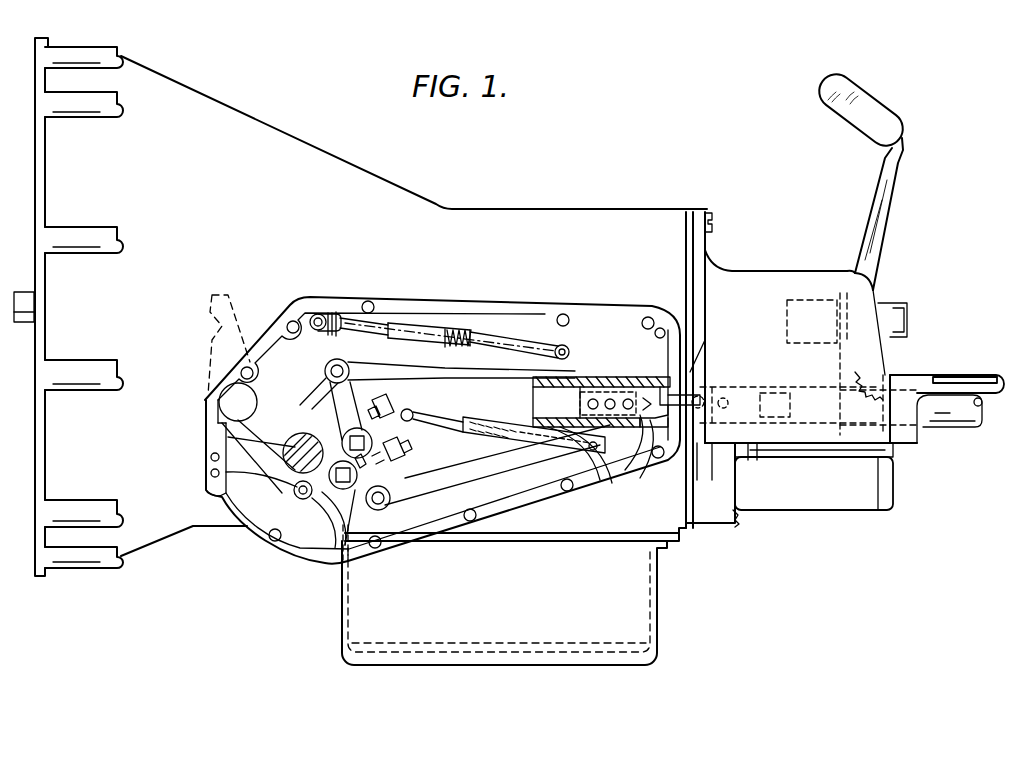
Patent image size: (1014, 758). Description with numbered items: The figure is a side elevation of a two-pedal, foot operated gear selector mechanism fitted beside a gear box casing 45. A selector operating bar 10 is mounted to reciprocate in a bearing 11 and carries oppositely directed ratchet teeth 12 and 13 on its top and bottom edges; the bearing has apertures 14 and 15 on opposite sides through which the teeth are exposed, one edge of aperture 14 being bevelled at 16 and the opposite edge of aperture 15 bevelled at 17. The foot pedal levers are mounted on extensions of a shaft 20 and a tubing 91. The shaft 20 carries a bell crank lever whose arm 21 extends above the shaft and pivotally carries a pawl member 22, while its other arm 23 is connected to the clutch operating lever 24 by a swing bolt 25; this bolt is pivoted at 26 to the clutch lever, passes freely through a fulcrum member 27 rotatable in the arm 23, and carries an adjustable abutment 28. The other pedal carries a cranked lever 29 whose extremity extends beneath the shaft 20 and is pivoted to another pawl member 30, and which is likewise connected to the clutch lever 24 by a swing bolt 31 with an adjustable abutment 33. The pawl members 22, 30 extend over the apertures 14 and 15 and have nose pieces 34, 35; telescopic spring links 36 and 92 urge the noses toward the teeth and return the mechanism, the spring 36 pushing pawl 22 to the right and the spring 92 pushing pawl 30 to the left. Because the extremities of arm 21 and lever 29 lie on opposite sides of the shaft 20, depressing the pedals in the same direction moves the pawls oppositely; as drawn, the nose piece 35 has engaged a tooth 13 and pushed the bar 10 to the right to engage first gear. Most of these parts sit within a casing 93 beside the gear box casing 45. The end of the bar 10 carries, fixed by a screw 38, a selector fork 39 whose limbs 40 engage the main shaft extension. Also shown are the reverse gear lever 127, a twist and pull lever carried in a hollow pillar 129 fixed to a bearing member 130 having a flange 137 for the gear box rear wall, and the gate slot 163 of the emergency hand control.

The selector operating bar 10 is at (607, 387).
The bearing 11 is at (570, 380).
The ratchet teeth 12 is at (700, 380).
The ratchet teeth 13 is at (748, 447).
The aperture 14 is at (603, 383).
The aperture 15 is at (610, 420).
The bevel 16 is at (707, 360).
The bevel 17 is at (605, 433).
The shaft 20 is at (287, 437).
The bell crank lever arm 21 is at (343, 427).
The pawl member 22 is at (430, 370).
The bell crank lever arm 23 is at (323, 488).
The clutch operating lever 24 is at (267, 473).
The swing bolt 25 is at (300, 543).
The pivot 26 is at (294, 488).
The fulcrum member 27 is at (337, 487).
The adjustable abutment 28 is at (400, 493).
The cranked lever 29 is at (367, 492).
The pawl member 30 is at (453, 480).
The swing bolt 31 is at (277, 457).
The adjustable abutment 33 is at (407, 427).
The nose piece 34 is at (673, 357).
The nose piece 35 is at (648, 423).
The telescopic spring link 36 is at (460, 337).
The screw 38 is at (887, 363).
The selector fork 39 is at (908, 330).
The fork limbs 40 is at (863, 303).
The gear box casing 45 is at (610, 212).
The tubing 91 is at (290, 433).
The telescopic spring link 92 is at (477, 437).
The casing 93 is at (523, 306).
The reverse gear lever 127 is at (880, 252).
The hollow pillar 129 is at (887, 448).
The bearing member 130 is at (827, 497).
The flange 137 is at (740, 522).
The gate slot 163 is at (958, 377).